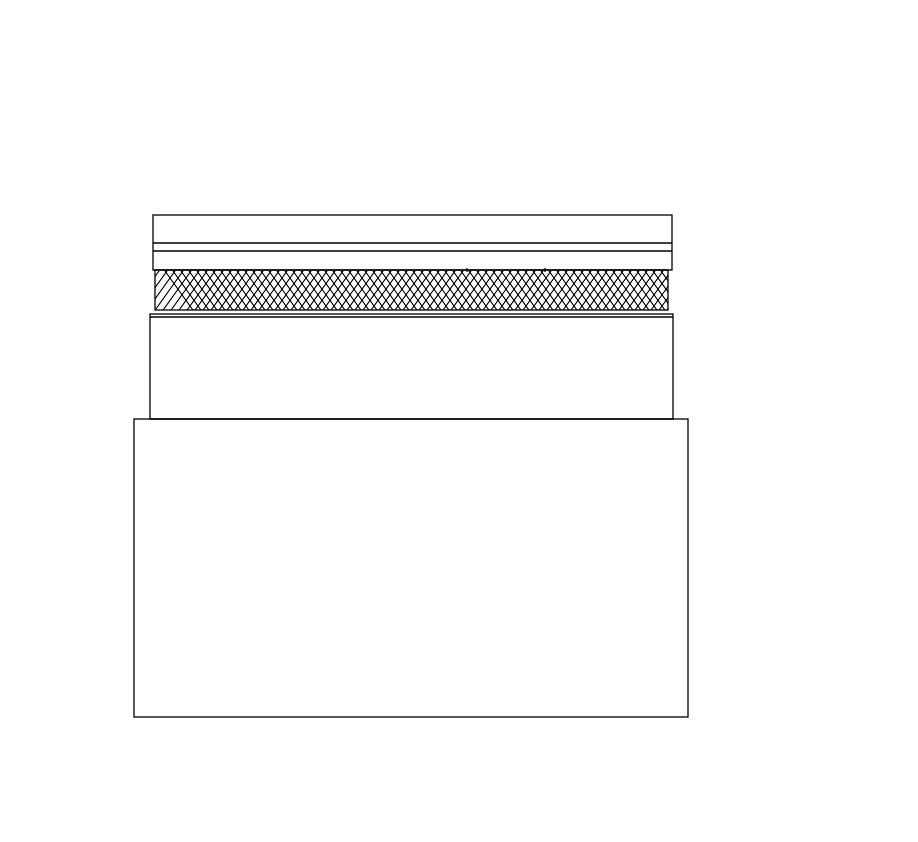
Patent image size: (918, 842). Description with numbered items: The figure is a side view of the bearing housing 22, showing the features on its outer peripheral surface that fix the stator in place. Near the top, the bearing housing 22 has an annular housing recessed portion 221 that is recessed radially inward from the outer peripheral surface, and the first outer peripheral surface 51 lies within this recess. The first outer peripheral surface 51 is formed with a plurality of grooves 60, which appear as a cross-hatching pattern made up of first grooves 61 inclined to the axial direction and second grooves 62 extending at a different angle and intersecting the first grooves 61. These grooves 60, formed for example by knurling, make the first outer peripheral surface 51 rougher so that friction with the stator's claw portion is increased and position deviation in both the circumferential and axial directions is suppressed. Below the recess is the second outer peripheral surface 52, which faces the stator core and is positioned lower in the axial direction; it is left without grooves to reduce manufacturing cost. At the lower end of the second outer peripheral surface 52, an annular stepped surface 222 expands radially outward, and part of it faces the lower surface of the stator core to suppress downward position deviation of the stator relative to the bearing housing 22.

The bearing housing 22 is at (329, 162).
The housing recessed portion 221 is at (148, 288).
The stepped surface 222 is at (145, 418).
The first outer peripheral surface 51 is at (660, 290).
The second outer peripheral surface 52 is at (660, 380).
The grooves 60 is at (547, 152).
The first grooves 61 is at (468, 268).
The second grooves 62 is at (545, 268).